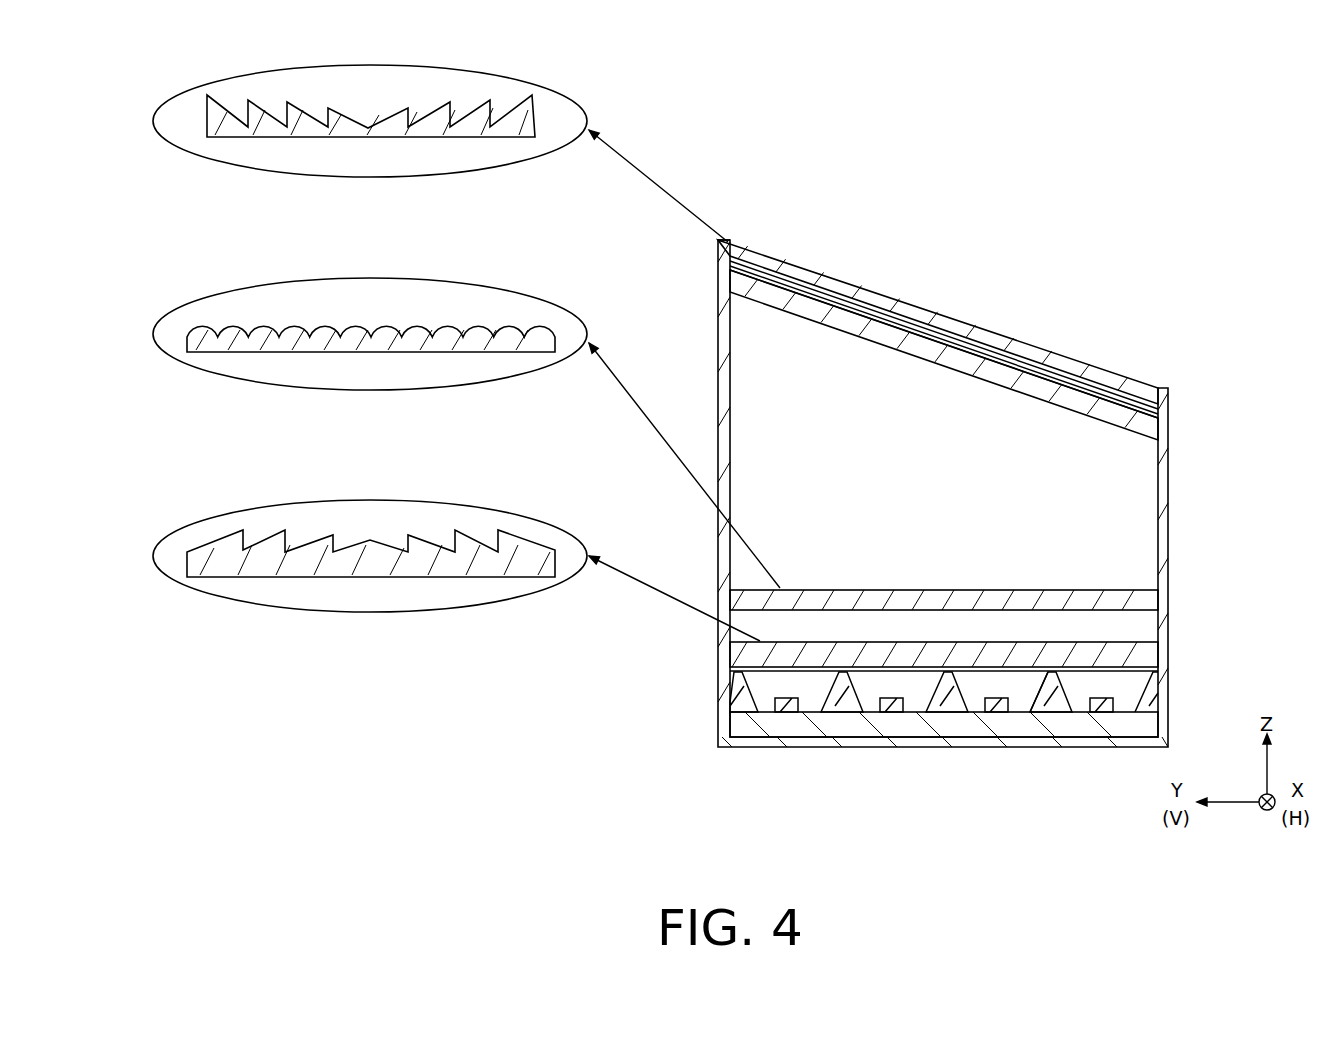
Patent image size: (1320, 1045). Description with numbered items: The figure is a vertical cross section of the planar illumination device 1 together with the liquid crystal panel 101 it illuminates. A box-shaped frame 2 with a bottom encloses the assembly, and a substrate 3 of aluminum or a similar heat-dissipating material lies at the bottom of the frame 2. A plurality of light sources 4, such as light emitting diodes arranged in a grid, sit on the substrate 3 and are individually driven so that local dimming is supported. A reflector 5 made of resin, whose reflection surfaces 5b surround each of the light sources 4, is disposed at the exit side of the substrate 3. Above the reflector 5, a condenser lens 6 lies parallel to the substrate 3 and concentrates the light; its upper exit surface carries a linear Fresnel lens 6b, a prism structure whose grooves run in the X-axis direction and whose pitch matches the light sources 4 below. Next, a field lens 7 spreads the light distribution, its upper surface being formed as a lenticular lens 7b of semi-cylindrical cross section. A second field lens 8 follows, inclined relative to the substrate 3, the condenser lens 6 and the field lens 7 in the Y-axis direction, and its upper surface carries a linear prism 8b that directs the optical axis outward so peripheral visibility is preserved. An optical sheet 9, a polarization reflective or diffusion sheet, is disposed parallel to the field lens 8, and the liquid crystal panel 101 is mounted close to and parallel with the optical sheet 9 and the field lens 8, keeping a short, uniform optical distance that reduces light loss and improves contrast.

The planar illumination device 1 is at (1135, 292).
The liquid crystal panel 101 is at (1133, 388).
The frame 2 is at (1163, 523).
The substrate 3 is at (1148, 724).
The light source 4 is at (1097, 702).
The reflector 5 is at (1053, 702).
The reflection surface 5b is at (1034, 688).
The condenser lens 6 is at (1150, 653).
The linear Fresnel lens 6b is at (378, 527).
The field lens 7 is at (1150, 597).
The lenticular lens 7b is at (378, 312).
The field lens 8 is at (1148, 429).
The linear prism 8b is at (380, 94).
The optical sheet 9 is at (1158, 407).